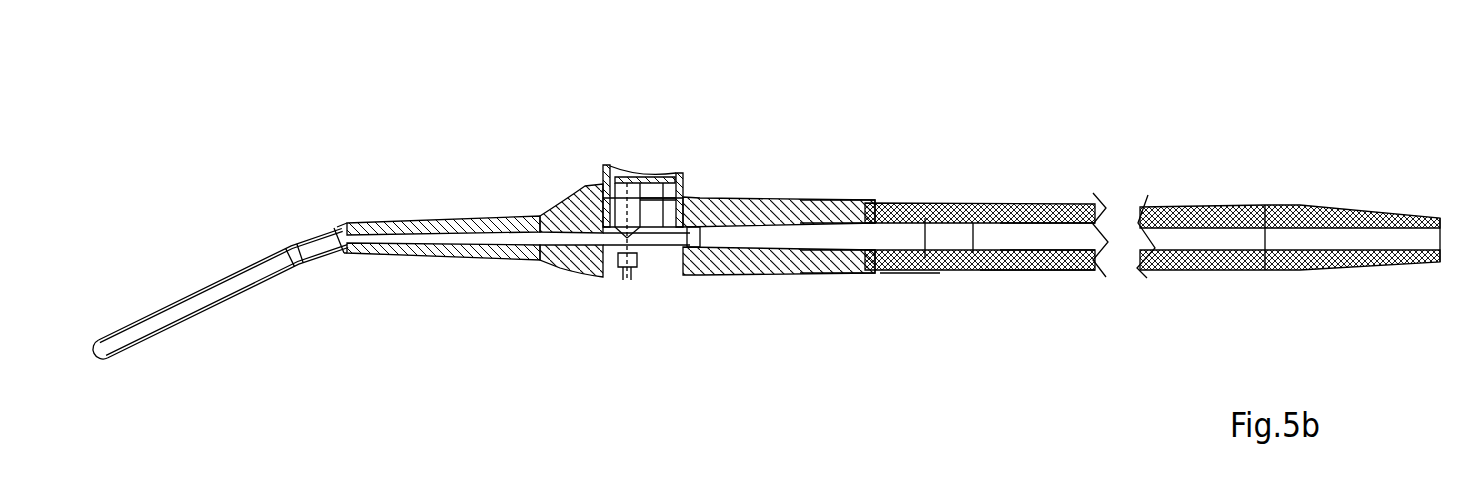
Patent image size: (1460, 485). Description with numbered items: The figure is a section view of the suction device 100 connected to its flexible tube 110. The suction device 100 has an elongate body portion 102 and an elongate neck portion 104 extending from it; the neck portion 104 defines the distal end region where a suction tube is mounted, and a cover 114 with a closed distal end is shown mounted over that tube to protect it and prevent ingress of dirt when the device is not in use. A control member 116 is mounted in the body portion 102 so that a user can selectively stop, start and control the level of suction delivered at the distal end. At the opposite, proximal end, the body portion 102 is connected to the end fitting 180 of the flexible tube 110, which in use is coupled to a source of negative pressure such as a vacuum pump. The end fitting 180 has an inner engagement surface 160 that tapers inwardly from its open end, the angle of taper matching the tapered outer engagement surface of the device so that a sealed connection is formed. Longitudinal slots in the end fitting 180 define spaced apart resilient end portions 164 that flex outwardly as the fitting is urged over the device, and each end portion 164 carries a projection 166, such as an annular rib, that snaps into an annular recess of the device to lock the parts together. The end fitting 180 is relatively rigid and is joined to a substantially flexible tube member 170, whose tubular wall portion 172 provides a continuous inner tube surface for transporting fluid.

The suction device 100 is at (450, 175).
The body portion 102 is at (753, 272).
The neck portion 104 is at (435, 257).
The flexible tube 110 is at (1250, 158).
The cover 114 is at (195, 297).
The control member 116 is at (652, 165).
The inner engagement surface 160 is at (905, 208).
The resilient end portions 164 is at (847, 270).
The projection 166 is at (840, 205).
The tube member 170 is at (1062, 237).
The tubular wall portion 172 is at (1063, 267).
The end fitting 180 is at (905, 282).